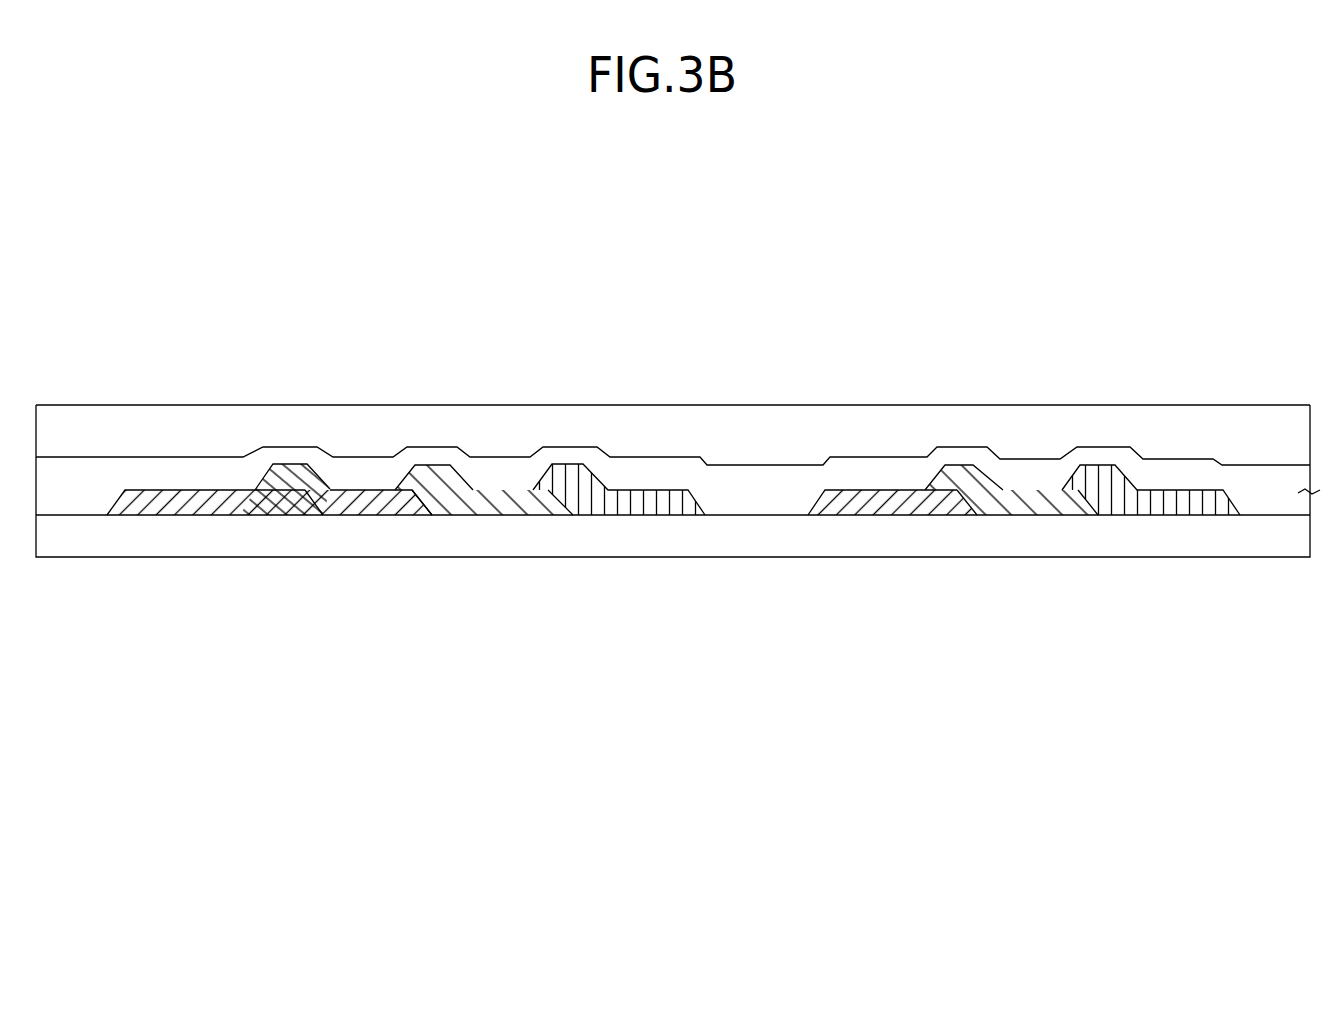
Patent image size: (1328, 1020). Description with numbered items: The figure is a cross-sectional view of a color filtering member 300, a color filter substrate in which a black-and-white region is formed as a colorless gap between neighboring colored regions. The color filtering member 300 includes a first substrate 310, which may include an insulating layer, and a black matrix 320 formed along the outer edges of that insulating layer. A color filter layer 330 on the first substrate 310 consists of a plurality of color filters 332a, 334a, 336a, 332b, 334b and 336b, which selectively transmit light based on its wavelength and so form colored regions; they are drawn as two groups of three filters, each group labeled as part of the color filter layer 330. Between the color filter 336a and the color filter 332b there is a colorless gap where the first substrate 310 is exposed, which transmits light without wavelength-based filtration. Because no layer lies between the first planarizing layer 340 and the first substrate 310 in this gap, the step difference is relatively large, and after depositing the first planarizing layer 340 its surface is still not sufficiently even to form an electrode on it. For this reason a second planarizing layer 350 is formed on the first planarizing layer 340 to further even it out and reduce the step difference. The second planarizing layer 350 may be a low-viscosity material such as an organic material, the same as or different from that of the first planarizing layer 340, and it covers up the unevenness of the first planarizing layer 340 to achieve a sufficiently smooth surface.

The color filtering member 300 is at (698, 337).
The first substrate 310 is at (73, 555).
The black matrix 320 is at (180, 515).
The color filter layer 330 is at (660, 640).
The color filter 332a is at (362, 510).
The color filter 334a is at (498, 507).
The color filter 336a is at (637, 507).
The color filter 332b is at (887, 510).
The color filter 334b is at (1030, 508).
The color filter 336b is at (1168, 508).
The first planarizing layer 340 is at (735, 508).
The second planarizing layer 350 is at (797, 447).